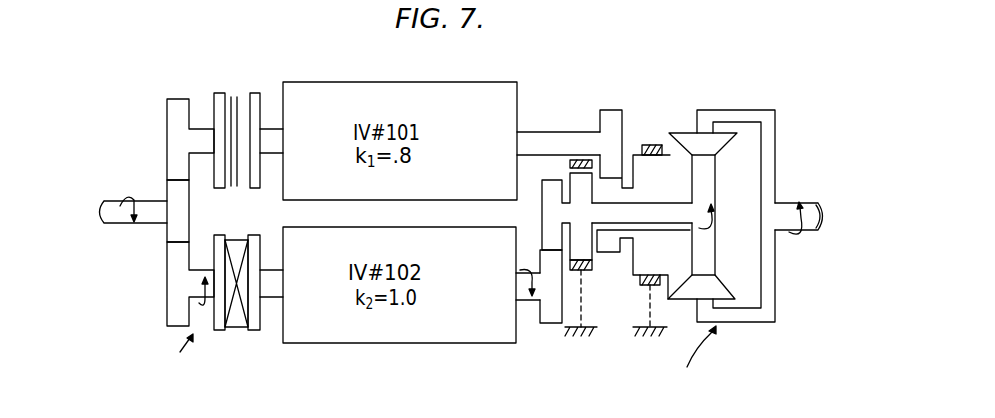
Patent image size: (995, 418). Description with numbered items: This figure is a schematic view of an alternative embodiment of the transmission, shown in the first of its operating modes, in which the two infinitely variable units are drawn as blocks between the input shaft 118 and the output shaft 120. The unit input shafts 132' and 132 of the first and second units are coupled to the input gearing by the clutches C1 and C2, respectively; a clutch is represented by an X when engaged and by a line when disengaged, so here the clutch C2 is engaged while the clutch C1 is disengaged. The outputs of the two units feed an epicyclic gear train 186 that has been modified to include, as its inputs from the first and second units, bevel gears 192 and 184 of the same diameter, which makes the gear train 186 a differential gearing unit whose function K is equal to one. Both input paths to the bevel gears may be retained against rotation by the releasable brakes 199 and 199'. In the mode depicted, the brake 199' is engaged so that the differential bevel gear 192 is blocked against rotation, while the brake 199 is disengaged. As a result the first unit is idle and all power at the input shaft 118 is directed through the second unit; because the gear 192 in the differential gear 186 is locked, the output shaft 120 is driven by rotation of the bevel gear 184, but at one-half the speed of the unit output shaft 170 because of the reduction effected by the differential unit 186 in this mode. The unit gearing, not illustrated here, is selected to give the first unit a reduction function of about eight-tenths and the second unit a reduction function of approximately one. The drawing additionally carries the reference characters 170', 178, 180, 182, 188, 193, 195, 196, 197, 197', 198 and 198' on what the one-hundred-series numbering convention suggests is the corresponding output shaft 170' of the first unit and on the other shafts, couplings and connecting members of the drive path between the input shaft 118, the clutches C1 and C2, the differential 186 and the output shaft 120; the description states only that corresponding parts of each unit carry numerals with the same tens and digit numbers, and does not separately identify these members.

The input shaft 118 is at (120, 227).
The output shaft 120 is at (815, 230).
The unit input shaft 132 is at (295, 303).
The unit input shaft 132' is at (296, 119).
The unit output shaft 170 is at (503, 304).
The output shaft of IV#101 170' is at (558, 121).
The rotation direction arrow 178 is at (180, 352).
The coupling member 180 is at (548, 220).
The shaft 182 is at (670, 217).
The bevel gear 184 is at (730, 160).
The epicyclic gear train 186 is at (683, 354).
The connecting member 188 is at (610, 250).
The bevel gear 192 is at (677, 152).
The bevel gear member 193 is at (700, 140).
The output shaft 195 is at (768, 163).
The hub 196 is at (182, 210).
The clutch carrier 197 is at (156, 284).
The clutch carrier 197' is at (158, 129).
The coupling plate 198 is at (529, 316).
The coupling plate 198' is at (637, 124).
The releasable brake 199 is at (528, 248).
The releasable brake 199' is at (655, 285).
The clutch C1 is at (230, 97).
The clutch C2 is at (233, 329).